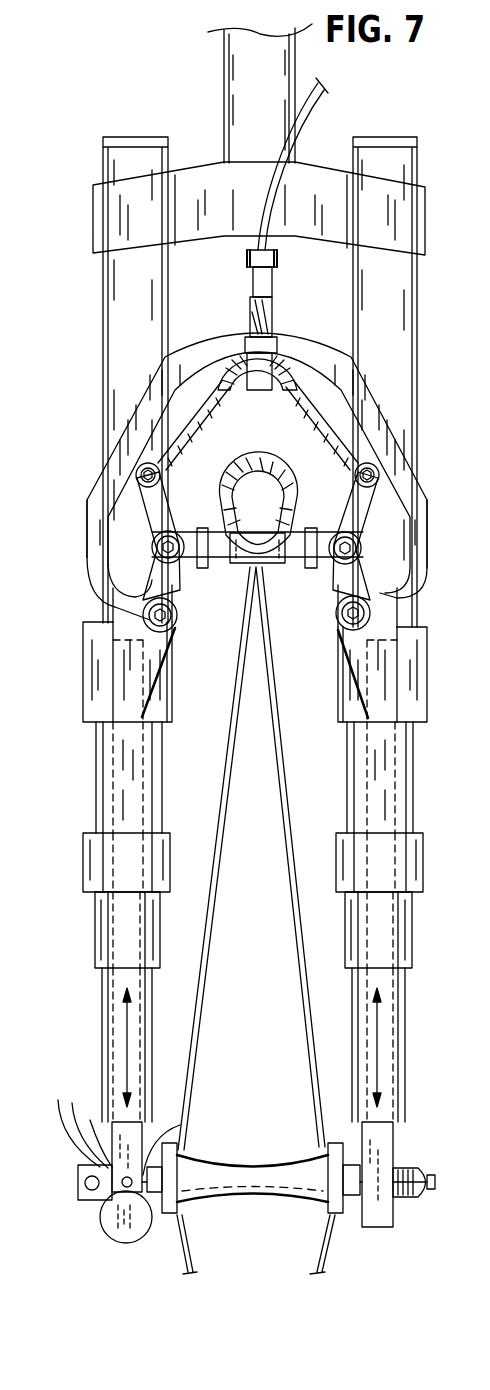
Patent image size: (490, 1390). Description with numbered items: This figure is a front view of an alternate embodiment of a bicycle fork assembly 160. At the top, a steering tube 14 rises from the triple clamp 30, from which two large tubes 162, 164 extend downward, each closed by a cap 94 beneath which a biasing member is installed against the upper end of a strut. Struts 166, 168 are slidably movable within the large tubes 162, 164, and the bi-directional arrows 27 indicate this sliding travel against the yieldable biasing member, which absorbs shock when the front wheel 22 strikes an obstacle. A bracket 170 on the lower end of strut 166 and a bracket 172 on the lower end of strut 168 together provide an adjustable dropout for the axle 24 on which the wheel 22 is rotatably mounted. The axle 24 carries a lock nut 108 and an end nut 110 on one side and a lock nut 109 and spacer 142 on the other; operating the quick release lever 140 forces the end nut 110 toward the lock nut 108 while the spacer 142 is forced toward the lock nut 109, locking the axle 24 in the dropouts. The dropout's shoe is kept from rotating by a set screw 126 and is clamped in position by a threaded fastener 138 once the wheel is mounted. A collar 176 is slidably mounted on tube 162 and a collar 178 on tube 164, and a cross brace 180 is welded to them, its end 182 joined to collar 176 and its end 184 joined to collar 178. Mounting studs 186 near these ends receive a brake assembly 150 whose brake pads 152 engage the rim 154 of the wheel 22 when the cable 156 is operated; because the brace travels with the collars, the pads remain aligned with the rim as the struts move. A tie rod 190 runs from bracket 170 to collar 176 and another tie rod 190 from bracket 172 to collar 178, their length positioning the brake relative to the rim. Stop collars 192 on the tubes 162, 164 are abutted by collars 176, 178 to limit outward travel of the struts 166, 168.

The steering tube 14 is at (223, 78).
The front wheel 22 is at (298, 468).
The axle 24 is at (437, 1180).
The bi-directional arrows 27 is at (377, 1053).
The triple clamp 30 is at (243, 200).
The cap 94 is at (152, 136).
The lock nut 108 is at (326, 1240).
The lock nut 109 is at (145, 1185).
The end nut 110 is at (410, 1200).
The set screw 126 is at (122, 1180).
The threaded fastener 138 is at (102, 1215).
The lever 140 is at (73, 1117).
The spacer 142 is at (98, 1120).
The brake assembly 150 is at (199, 487).
The brake pads 152 is at (210, 570).
The rim 154 is at (273, 577).
The cable 156 is at (268, 198).
The fork assembly 160 is at (108, 120).
The large tube 162 is at (413, 810).
The large tube 164 is at (96, 815).
The strut 166 is at (402, 1047).
The strut 168 is at (102, 1010).
The bracket 170 is at (410, 1117).
The bracket 172 is at (143, 1133).
The collar 176 is at (427, 686).
The collar 178 is at (174, 712).
The cross brace 180 is at (380, 380).
The end of brace 182 is at (387, 727).
The end of brace 184 is at (130, 727).
The mounting studs 186 is at (172, 622).
The tie rod 190 is at (112, 930).
The stop collars 192 is at (173, 847).